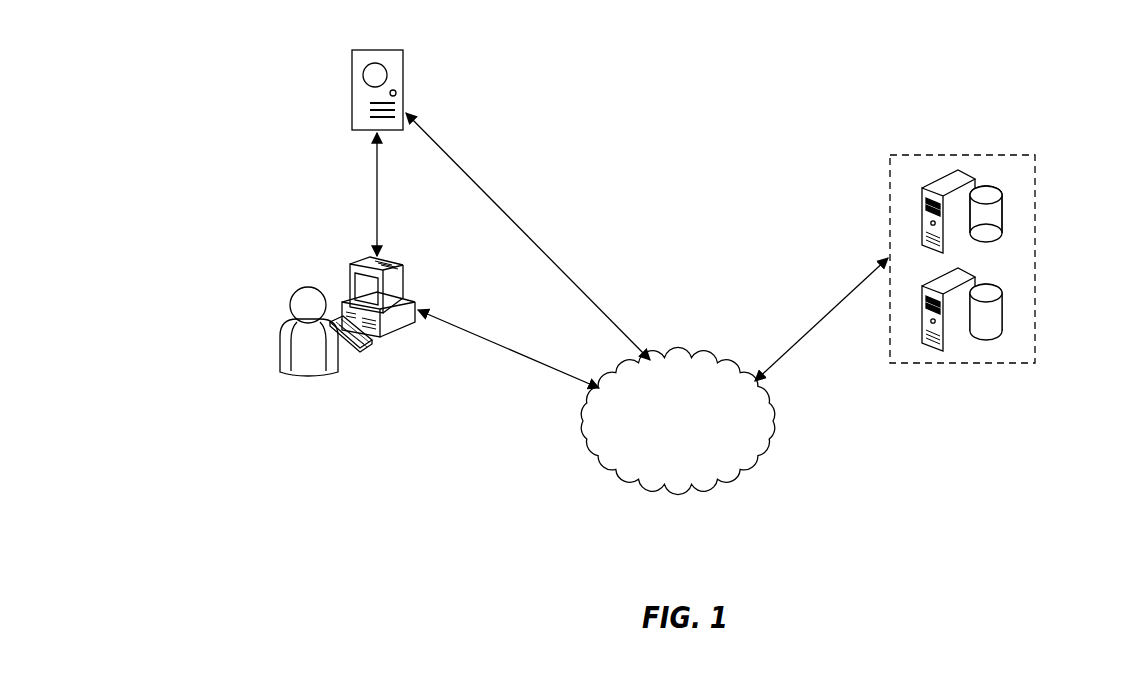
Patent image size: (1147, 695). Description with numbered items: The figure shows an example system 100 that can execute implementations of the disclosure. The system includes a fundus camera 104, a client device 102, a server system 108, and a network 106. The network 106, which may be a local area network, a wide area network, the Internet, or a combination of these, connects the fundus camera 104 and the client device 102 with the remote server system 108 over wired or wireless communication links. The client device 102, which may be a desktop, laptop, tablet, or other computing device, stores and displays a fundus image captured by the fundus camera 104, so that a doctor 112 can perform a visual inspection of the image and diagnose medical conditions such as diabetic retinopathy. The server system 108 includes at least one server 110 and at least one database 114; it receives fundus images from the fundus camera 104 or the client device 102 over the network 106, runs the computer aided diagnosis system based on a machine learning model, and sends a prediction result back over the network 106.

The example system 100 is at (974, 472).
The client device 102 is at (350, 266).
The fundus camera 104 is at (352, 57).
The network 106 is at (692, 358).
The server system 108 is at (1035, 260).
The server 110 is at (922, 203).
The doctor 112 is at (291, 298).
The database 114 is at (1003, 219).